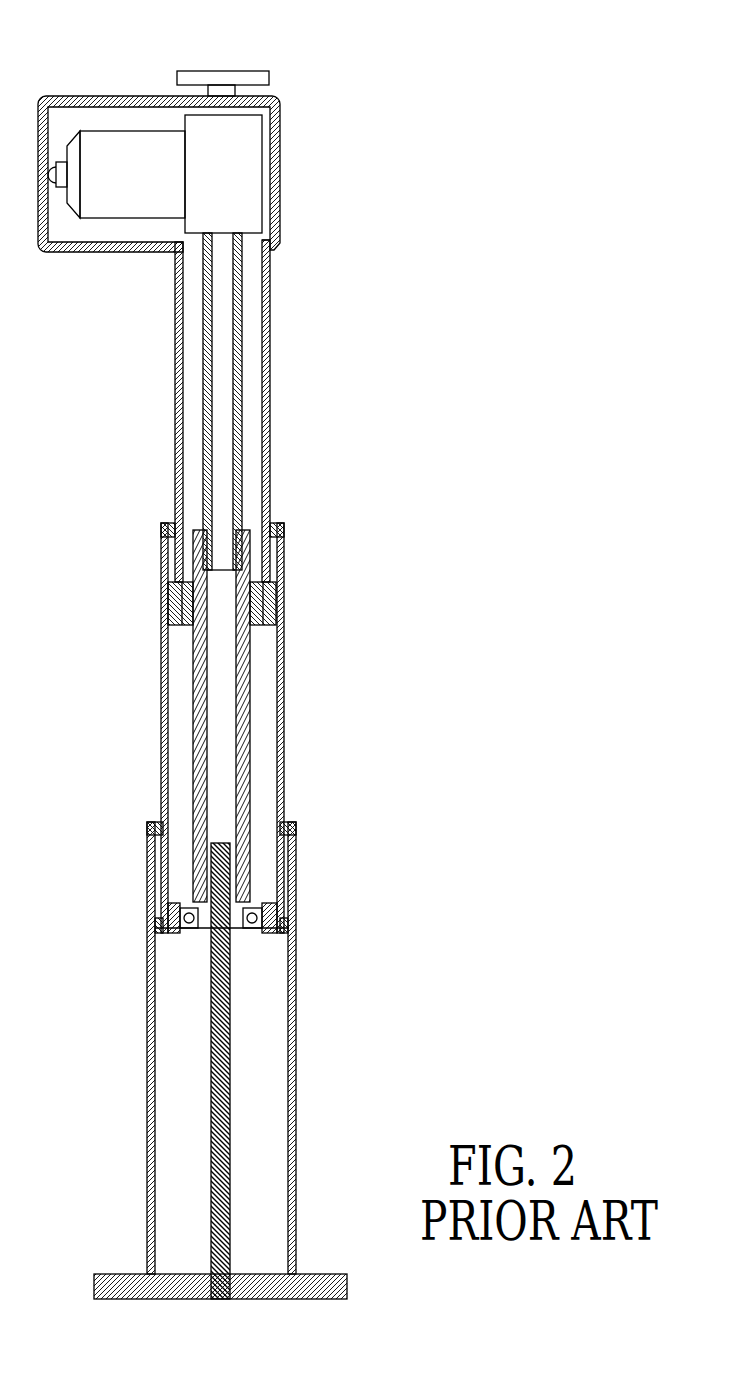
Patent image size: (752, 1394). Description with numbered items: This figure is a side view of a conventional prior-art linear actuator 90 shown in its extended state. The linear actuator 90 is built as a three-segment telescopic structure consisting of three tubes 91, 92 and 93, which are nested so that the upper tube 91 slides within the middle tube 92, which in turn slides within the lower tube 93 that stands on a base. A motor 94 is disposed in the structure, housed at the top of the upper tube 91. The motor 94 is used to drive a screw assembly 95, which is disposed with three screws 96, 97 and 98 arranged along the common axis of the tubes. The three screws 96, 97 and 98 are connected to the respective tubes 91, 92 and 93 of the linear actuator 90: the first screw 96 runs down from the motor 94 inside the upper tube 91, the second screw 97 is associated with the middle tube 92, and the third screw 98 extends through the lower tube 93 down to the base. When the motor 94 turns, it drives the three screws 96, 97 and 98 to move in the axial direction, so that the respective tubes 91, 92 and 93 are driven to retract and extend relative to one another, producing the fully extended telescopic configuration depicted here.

The linear actuator 90 is at (386, 62).
The tube 91 is at (270, 348).
The tube 92 is at (283, 700).
The tube 93 is at (296, 1010).
The motor 94 is at (243, 183).
The screw assembly 95 is at (191, 247).
The screw 96 is at (240, 292).
The screw 97 is at (248, 667).
The screw 98 is at (223, 1125).